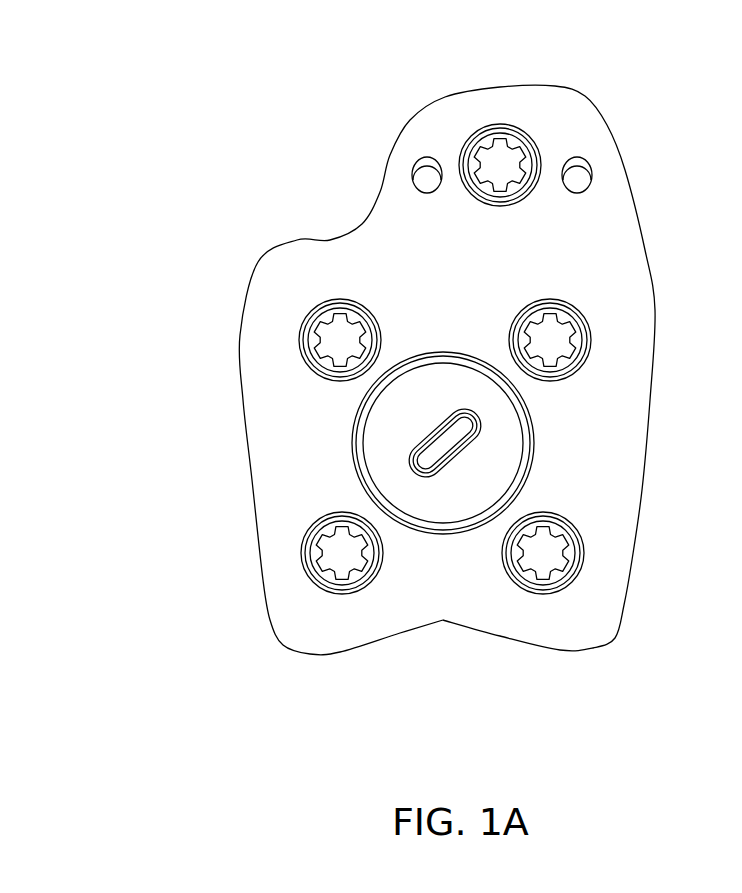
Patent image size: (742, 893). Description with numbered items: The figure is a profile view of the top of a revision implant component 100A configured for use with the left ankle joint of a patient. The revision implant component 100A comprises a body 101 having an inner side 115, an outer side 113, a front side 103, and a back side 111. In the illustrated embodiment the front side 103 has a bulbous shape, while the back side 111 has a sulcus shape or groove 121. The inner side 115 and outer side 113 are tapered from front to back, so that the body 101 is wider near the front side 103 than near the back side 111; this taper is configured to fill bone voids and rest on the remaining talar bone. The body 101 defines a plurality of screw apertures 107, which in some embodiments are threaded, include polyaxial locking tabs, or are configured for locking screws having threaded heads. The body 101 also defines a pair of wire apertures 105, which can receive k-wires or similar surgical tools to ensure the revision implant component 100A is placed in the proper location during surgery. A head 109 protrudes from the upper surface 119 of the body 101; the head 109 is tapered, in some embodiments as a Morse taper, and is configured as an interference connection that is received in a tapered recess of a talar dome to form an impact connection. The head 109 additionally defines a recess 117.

The revision implant component 100A is at (333, 85).
The body 101 is at (638, 206).
The front side 103 is at (485, 88).
The wire apertures 105 is at (430, 168).
The screw apertures 107 is at (445, 359).
The head 109 is at (352, 453).
The back side 111 is at (360, 658).
The outer side 113 is at (243, 397).
The inner side 115 is at (632, 566).
The recess 117 is at (437, 457).
The upper surface 119 is at (318, 274).
The groove 121 is at (443, 632).